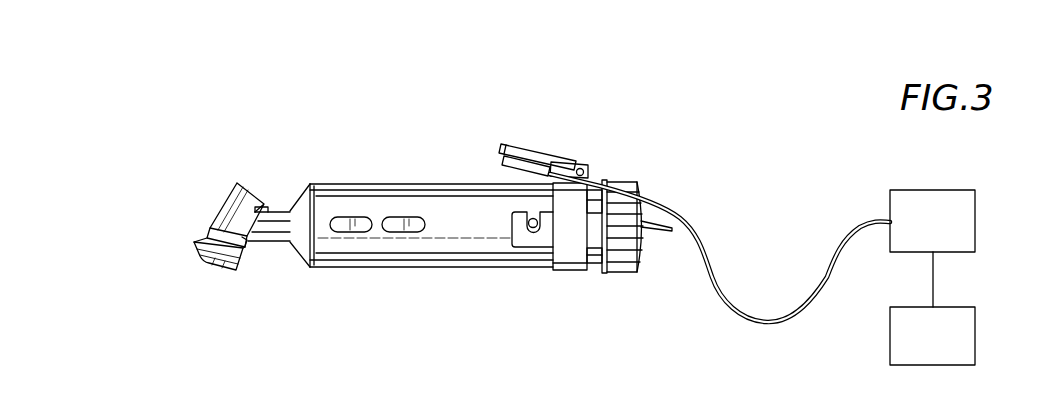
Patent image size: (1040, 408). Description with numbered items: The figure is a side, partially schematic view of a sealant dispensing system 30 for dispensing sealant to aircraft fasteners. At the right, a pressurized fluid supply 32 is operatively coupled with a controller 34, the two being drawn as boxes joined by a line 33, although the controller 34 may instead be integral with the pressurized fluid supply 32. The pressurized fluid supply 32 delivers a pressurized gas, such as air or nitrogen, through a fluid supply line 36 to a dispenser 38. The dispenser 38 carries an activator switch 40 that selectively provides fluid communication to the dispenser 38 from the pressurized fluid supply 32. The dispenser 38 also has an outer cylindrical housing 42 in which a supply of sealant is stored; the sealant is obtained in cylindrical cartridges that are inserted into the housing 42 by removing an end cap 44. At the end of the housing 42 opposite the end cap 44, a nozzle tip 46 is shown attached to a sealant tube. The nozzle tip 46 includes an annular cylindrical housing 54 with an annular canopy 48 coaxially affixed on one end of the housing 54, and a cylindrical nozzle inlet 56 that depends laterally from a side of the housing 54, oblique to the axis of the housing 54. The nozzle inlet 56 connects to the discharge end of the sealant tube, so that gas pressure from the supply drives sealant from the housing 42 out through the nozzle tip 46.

The sealant dispensing system 30 is at (704, 187).
The pressurized fluid supply 32 is at (922, 236).
The line 33 is at (936, 280).
The controller 34 is at (922, 351).
The fluid supply line 36 is at (762, 325).
The dispenser 38 is at (611, 296).
The activator switch 40 is at (563, 151).
The outer cylindrical housing 42 is at (345, 256).
The end cap 44 is at (626, 182).
The nozzle tip 46 is at (213, 268).
The annular canopy 48 is at (196, 244).
The annular cylindrical housing 54 is at (227, 198).
The cylindrical nozzle inlet 56 is at (279, 210).